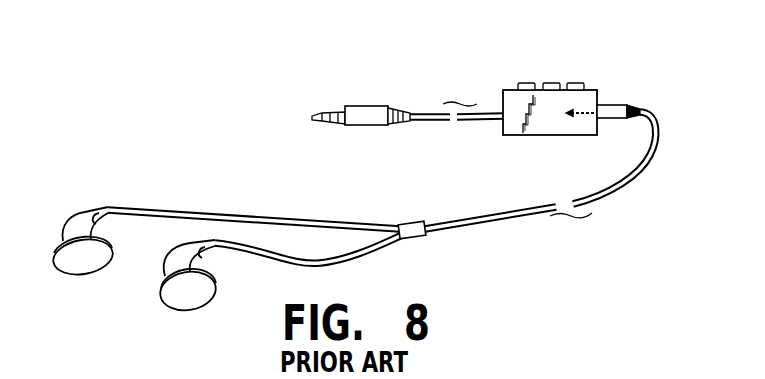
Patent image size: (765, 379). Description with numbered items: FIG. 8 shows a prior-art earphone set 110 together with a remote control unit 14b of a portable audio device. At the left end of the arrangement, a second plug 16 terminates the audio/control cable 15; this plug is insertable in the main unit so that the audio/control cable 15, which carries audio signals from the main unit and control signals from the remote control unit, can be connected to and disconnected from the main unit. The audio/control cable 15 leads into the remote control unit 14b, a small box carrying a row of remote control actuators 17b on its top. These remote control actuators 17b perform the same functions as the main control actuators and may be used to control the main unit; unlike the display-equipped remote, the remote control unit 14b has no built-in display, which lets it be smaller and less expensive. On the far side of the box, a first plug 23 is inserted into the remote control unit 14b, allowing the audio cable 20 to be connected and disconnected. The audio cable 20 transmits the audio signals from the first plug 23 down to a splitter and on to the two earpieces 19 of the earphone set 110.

The earphone set 110 is at (362, 174).
The second plug 16 is at (365, 125).
The audio/control cable 15 is at (482, 122).
The remote control unit 14b is at (568, 136).
The remote control actuators 17b is at (578, 82).
The first plug 23 is at (613, 108).
The audio cable 20 is at (612, 192).
The earphones 19 is at (157, 288).